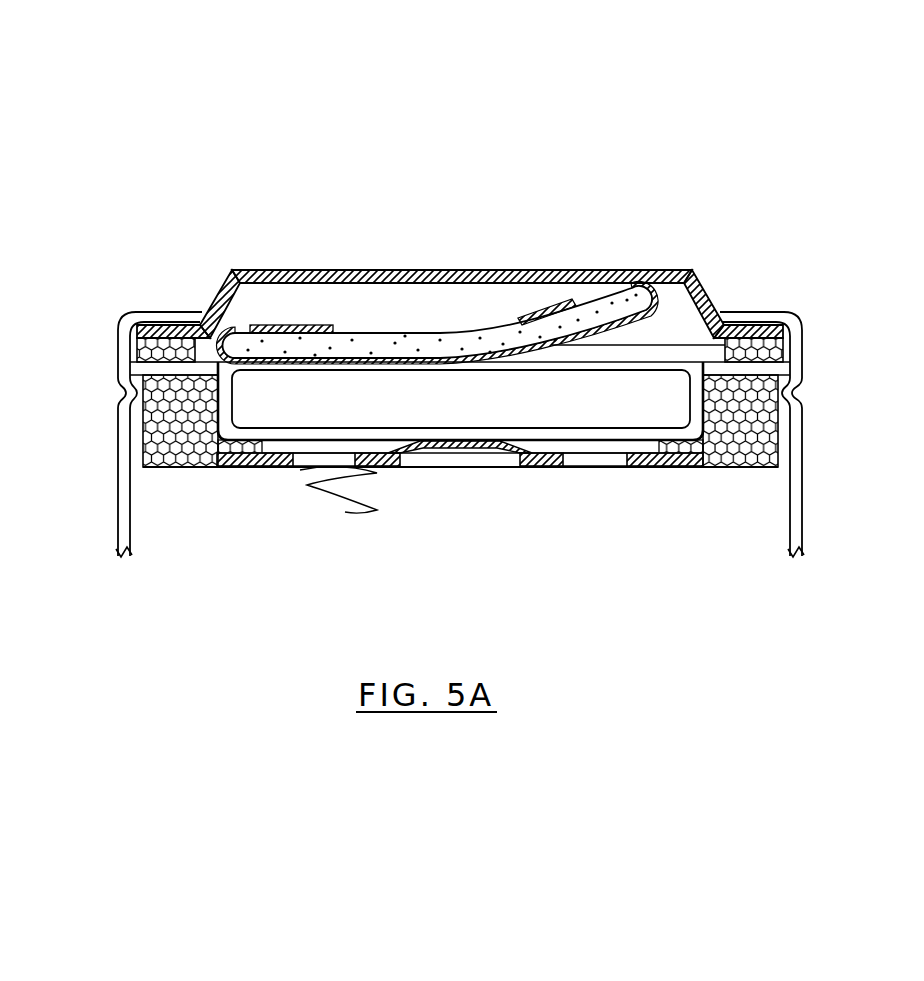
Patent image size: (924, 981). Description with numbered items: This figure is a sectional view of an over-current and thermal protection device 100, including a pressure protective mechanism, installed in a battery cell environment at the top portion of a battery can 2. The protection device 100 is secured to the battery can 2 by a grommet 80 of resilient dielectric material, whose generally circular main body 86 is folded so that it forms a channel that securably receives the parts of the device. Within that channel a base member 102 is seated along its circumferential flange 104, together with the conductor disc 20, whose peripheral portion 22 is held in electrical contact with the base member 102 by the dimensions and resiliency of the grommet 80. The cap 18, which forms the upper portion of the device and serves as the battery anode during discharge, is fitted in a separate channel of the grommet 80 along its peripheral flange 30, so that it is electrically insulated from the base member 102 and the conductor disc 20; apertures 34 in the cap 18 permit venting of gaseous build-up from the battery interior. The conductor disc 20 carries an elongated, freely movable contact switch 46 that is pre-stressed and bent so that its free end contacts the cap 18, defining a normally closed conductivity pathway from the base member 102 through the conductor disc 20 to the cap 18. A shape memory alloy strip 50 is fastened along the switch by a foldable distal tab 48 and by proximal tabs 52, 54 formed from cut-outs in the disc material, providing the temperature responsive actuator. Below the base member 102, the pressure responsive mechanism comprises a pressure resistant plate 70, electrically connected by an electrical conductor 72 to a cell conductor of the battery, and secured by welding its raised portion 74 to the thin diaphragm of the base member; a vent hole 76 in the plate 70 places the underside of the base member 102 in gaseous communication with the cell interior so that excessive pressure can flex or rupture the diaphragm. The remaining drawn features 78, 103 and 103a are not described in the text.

The battery can 2 is at (803, 530).
The cap 18 is at (518, 270).
The conductor disc 20 is at (657, 362).
The peripheral portion of the conductor disc 22 is at (143, 340).
The circumferential flange of the cap 30 is at (173, 343).
The aperture 34 is at (212, 325).
The contact switch 46 is at (407, 335).
The distal tab 48 is at (648, 285).
The shape memory alloy strip 50 is at (588, 322).
The proximal tab 52 is at (288, 332).
The proximal tab 54 is at (224, 357).
The pressure resistant plate 70 is at (675, 470).
The electrical conductor 72 is at (357, 515).
The raised portion 74 is at (477, 447).
The vent hole 76 is at (607, 472).
The bottom plate segment 78 is at (258, 478).
The grommet 80 is at (743, 470).
The main body of the grommet 86 is at (168, 463).
The protection device 100 is at (345, 262).
The base member 102 is at (218, 465).
The terminal segment 103 is at (550, 445).
The terminal gap 103a is at (598, 443).
The circumferential flange of the base member 104 is at (157, 370).